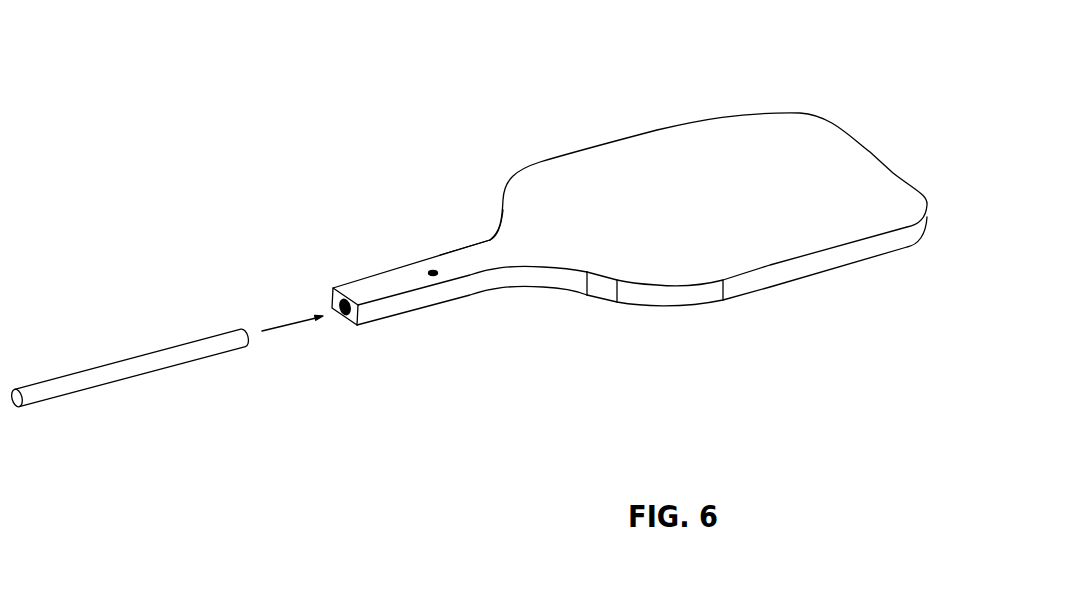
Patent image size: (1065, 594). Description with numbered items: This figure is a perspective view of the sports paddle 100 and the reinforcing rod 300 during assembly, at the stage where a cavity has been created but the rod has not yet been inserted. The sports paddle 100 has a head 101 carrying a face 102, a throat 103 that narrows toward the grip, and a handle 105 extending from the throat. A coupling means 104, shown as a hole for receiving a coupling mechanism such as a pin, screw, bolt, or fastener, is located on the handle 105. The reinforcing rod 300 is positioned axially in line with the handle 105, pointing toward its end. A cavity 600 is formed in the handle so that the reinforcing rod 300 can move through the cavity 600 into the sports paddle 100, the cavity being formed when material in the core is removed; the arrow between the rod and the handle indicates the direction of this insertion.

The sports paddle 100 is at (600, 170).
The head 101 is at (708, 178).
The face 102 is at (617, 173).
The throat 103 is at (493, 243).
The coupling means 104 is at (431, 270).
The handle 105 is at (430, 257).
The reinforcing rod 300 is at (133, 353).
The cavity 600 is at (333, 289).